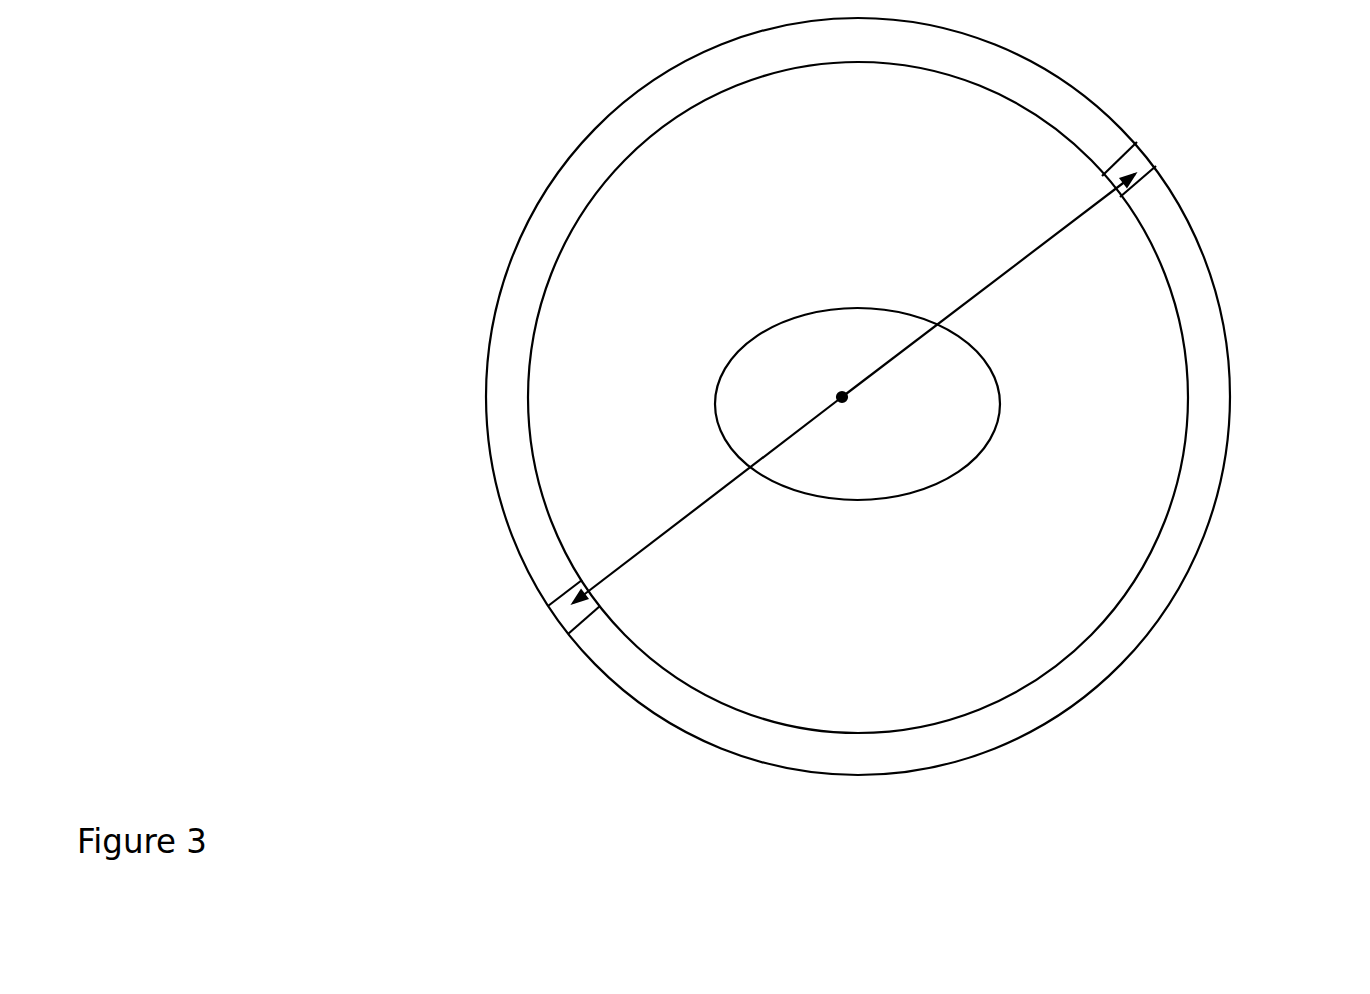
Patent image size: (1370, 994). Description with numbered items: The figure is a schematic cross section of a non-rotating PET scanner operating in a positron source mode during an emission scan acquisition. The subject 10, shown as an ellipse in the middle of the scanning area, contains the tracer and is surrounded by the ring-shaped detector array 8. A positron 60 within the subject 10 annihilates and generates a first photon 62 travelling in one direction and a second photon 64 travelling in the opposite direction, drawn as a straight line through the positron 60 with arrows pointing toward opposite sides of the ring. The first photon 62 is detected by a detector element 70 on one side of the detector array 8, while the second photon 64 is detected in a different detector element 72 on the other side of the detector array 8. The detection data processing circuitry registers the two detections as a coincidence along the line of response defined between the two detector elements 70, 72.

The detector array 8 is at (1235, 393).
The subject 10 is at (965, 470).
The positron 60 is at (840, 397).
The first photon 62 is at (1053, 237).
The second photon 64 is at (693, 518).
The detector element 70 is at (1150, 167).
The detector element 72 is at (563, 610).